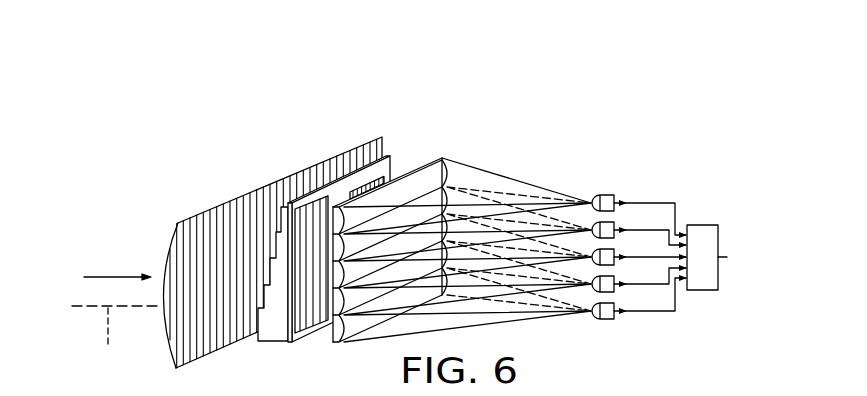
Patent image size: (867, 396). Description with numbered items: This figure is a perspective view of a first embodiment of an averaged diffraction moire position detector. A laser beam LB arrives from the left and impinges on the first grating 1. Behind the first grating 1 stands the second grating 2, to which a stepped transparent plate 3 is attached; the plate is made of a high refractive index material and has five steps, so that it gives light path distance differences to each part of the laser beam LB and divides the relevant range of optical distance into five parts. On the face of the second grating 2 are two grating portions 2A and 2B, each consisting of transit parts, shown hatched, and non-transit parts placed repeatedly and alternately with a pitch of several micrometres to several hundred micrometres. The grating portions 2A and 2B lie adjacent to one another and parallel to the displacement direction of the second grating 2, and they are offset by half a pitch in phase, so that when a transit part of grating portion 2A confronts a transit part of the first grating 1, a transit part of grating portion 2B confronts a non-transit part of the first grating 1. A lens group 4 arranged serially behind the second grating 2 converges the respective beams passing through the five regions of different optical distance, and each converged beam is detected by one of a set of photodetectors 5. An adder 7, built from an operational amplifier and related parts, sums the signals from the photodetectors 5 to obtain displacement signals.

The first grating 1 is at (220, 208).
The second grating 2 is at (370, 177).
The grating portion 2A is at (316, 203).
The grating portion 2B is at (340, 173).
The stepped transparent plate 3 is at (285, 243).
The lens group 4 is at (437, 172).
The photodetectors 5 is at (607, 195).
The adder 7 is at (703, 222).
The laser beam LB is at (116, 322).